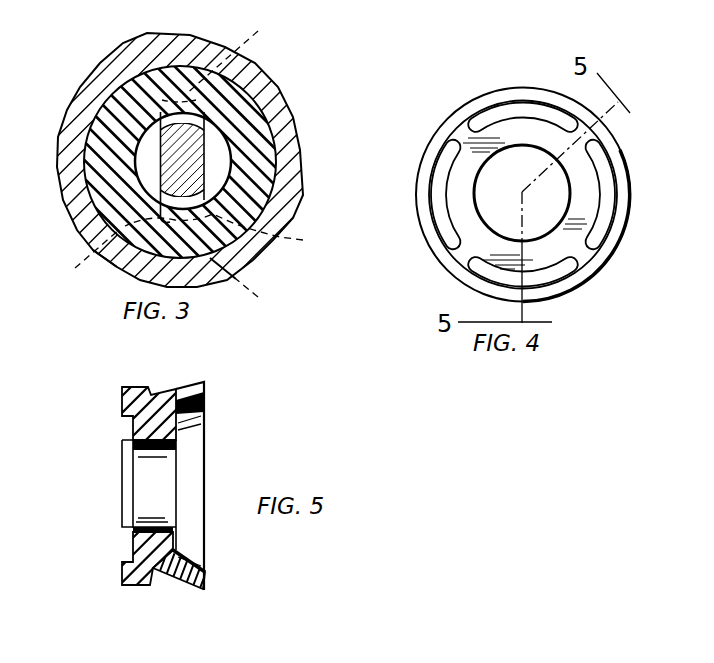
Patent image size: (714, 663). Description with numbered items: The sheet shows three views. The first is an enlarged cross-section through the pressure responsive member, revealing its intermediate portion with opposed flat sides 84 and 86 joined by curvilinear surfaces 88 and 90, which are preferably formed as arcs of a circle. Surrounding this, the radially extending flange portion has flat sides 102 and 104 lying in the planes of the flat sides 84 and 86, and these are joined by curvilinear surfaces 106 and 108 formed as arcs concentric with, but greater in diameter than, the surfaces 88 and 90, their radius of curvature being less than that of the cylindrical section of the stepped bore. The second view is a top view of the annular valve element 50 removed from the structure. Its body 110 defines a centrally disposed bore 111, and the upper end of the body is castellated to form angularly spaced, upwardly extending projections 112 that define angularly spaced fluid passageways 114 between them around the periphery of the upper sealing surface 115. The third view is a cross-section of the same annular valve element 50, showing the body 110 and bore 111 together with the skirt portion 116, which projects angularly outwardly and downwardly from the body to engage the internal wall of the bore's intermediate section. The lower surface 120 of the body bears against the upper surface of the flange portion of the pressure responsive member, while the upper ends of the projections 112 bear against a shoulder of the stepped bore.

In FIG. 3, the flat side 84 is at (130, 188).
In FIG. 3, the curvilinear surface 88 is at (206, 112).
In FIG. 3, the flat side 86 is at (135, 168).
In FIG. 3, the curvilinear surface 108 is at (231, 59).
In FIG. 3, the flat side 104 is at (235, 237).
In FIG. 3, the flat side 102 is at (76, 258).
In FIG. 3, the curvilinear surface 106 is at (253, 287).
In FIG. 3, the curvilinear surface 90 is at (119, 272).
In FIG. 4, the annular valve element 50 is at (462, 84).
In FIG. 5, the annular valve element 50 is at (168, 384).
In FIG. 4, the fluid passageway 114 is at (597, 262).
In FIG. 5, the fluid passageway 114 is at (122, 438).
In FIG. 4, the projection 112 is at (612, 202).
In FIG. 5, the projection 112 is at (135, 585).
In FIG. 4, the upper sealing surface 115 is at (580, 146).
In FIG. 5, the skirt portion 116 is at (204, 410).
In FIG. 5, the bore 111 is at (150, 521).
In FIG. 5, the lower surface 120 is at (177, 547).
In FIG. 5, the body 110 is at (158, 568).